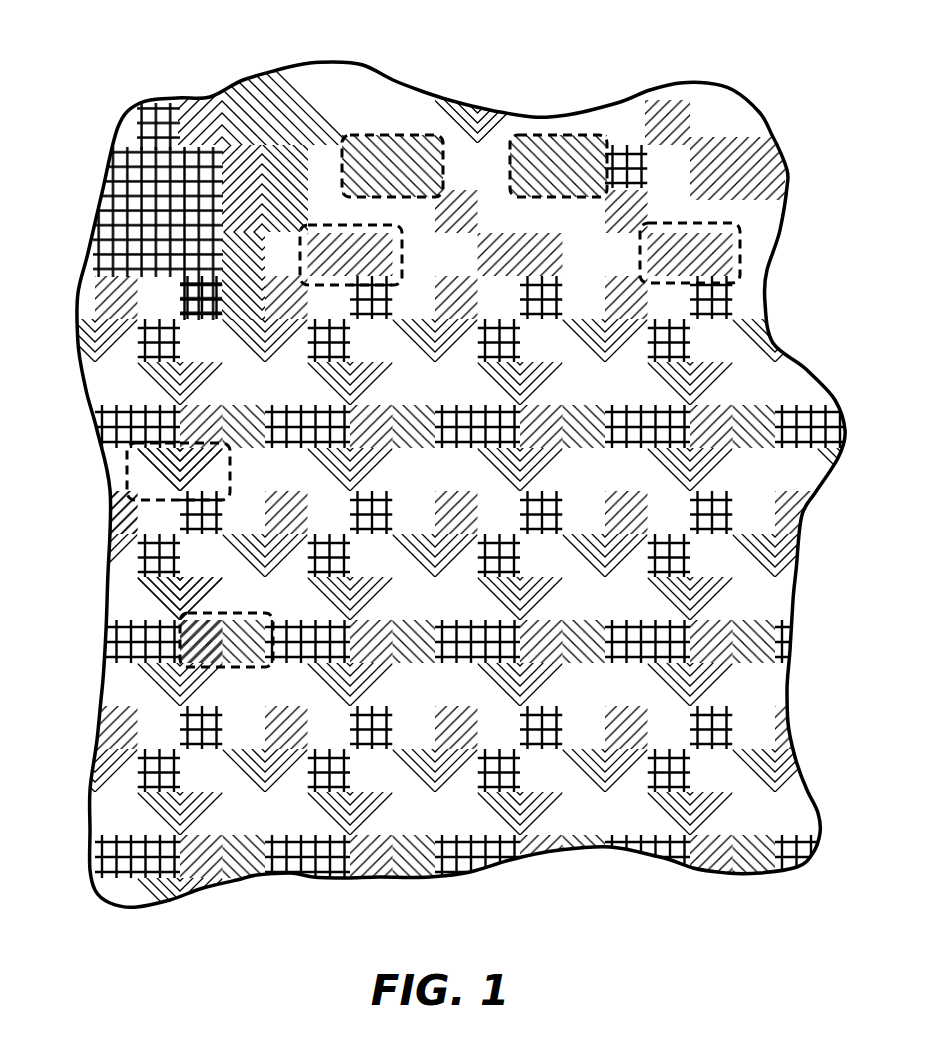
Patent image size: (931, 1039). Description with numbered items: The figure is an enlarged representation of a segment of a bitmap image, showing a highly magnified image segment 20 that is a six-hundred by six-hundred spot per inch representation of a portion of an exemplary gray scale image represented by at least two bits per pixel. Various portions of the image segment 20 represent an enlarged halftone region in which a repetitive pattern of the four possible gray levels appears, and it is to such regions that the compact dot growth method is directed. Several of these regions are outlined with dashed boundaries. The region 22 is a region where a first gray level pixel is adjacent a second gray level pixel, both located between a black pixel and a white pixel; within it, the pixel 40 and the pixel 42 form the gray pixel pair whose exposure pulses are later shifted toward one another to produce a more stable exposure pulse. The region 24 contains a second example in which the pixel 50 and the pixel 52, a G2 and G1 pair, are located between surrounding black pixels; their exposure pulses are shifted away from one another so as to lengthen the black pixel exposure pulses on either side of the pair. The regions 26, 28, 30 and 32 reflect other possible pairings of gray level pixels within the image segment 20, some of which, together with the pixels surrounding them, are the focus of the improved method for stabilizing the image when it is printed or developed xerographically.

The image segment 20 is at (243, 80).
The region 22 is at (127, 468).
The region 24 is at (187, 610).
The region 26 is at (690, 223).
The region 28 is at (390, 137).
The region 30 is at (325, 225).
The region 32 is at (557, 135).
The target pixel 40 is at (133, 500).
The pixel 42 is at (200, 473).
The target pixel 50 is at (202, 643).
The pixel 52 is at (243, 637).